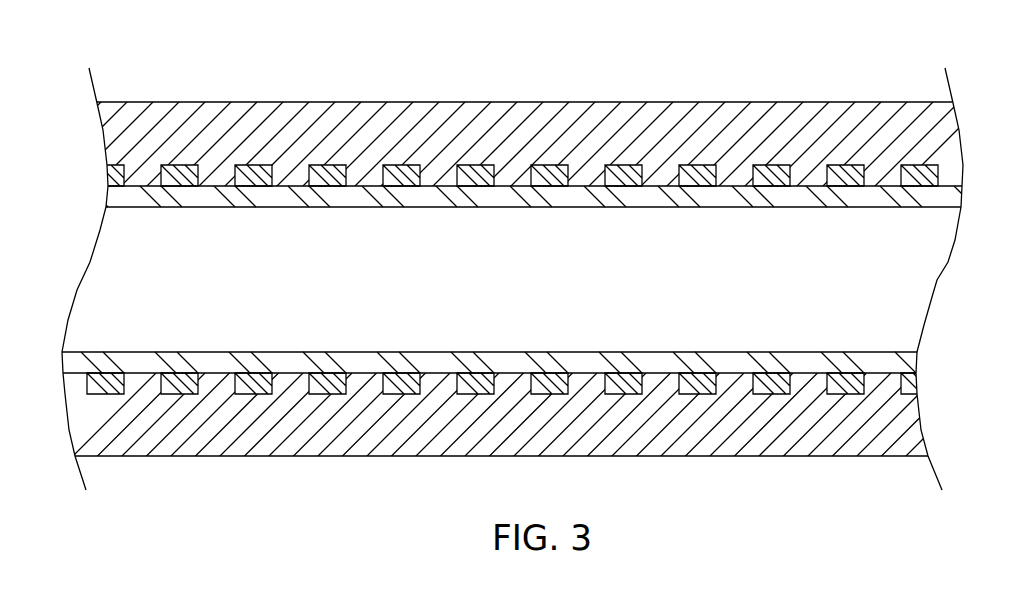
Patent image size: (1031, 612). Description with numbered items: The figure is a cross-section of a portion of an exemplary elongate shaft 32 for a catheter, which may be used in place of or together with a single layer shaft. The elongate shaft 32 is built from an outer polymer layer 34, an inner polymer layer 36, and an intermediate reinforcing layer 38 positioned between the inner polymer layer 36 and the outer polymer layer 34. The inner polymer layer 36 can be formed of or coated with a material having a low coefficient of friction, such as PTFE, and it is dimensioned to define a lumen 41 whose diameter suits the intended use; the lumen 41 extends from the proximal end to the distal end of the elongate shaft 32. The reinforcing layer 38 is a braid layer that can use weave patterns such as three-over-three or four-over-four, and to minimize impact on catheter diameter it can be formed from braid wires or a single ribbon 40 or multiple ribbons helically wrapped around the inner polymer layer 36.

The elongate shaft 32 is at (287, 77).
The outer polymer layer 34 is at (790, 115).
The inner polymer layer 36 is at (787, 200).
The reinforcing layer 38 is at (326, 397).
The ribbon 40 is at (180, 390).
The lumen 41 is at (907, 299).